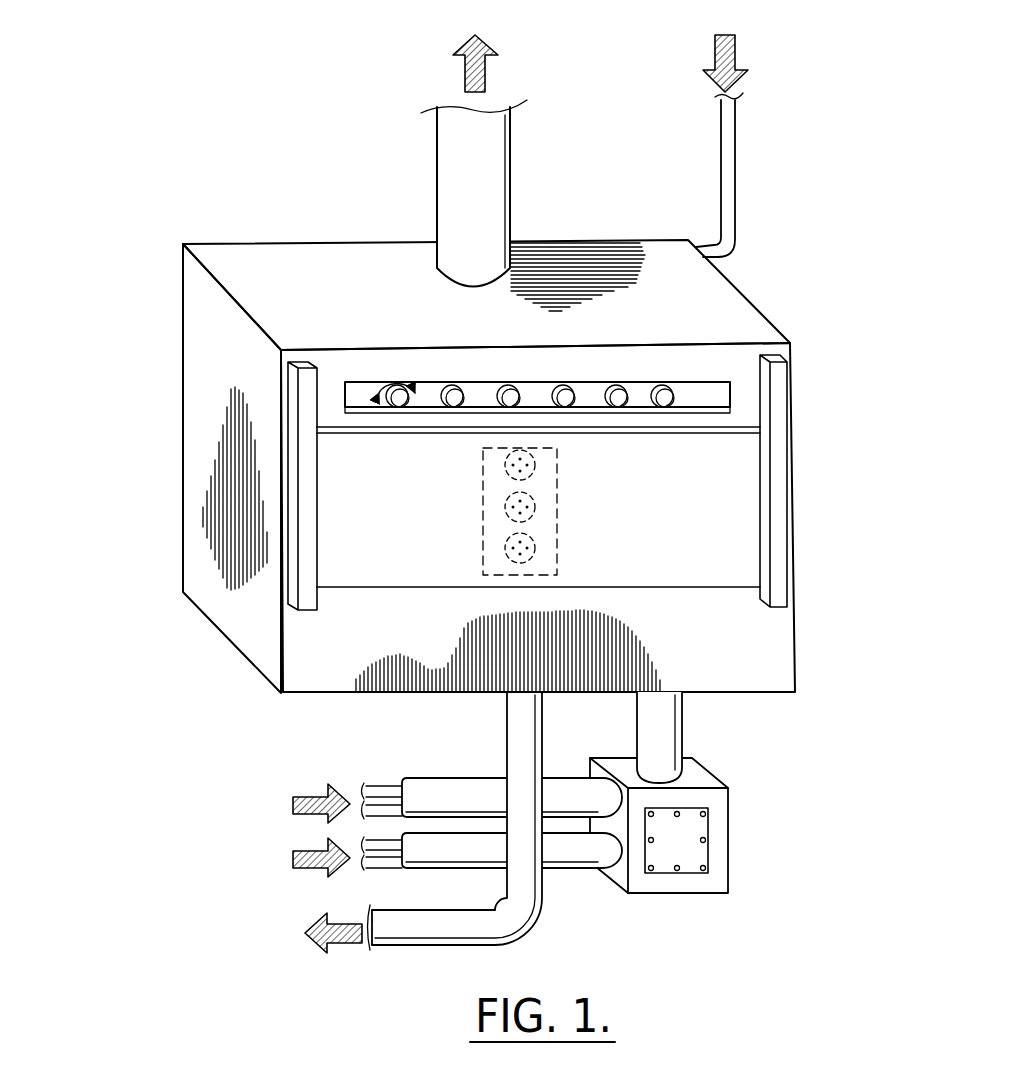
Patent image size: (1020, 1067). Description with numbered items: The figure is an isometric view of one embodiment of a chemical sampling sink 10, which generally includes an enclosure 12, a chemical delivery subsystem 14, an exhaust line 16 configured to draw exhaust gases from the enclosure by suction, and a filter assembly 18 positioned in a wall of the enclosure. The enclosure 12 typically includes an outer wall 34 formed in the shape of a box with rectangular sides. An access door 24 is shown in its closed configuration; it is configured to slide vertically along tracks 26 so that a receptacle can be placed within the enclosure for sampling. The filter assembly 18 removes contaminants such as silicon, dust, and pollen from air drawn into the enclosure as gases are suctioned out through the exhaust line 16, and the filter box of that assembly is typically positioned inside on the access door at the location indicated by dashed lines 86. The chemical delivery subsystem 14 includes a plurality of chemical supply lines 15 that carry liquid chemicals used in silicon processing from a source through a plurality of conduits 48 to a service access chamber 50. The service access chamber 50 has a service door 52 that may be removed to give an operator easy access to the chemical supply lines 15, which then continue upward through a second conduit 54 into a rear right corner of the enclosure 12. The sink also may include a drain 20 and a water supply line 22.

The chemical sampling sink 10 is at (810, 50).
The enclosure 12 is at (495, 472).
The chemical delivery subsystem 14 is at (544, 843).
The chemical supply lines 15 is at (387, 808).
The exhaust line 16 is at (513, 175).
The filter assembly 18 is at (538, 532).
The drain 20 is at (422, 948).
The water supply line 22 is at (735, 173).
The access door 24 is at (738, 585).
The tracks 26 is at (786, 380).
The outer wall 34 is at (236, 262).
The conduits 48 is at (553, 778).
The service access chamber 50 is at (728, 822).
The service door 52 is at (710, 857).
The second conduit 54 is at (680, 722).
The dashed lines 86 is at (560, 543).